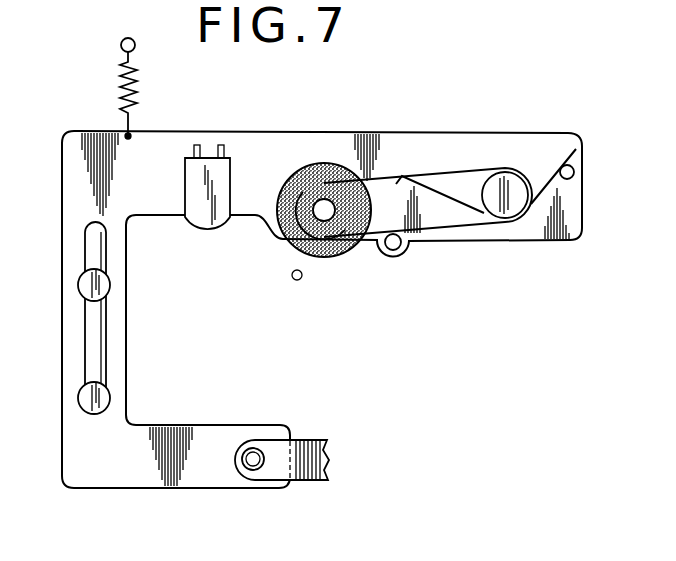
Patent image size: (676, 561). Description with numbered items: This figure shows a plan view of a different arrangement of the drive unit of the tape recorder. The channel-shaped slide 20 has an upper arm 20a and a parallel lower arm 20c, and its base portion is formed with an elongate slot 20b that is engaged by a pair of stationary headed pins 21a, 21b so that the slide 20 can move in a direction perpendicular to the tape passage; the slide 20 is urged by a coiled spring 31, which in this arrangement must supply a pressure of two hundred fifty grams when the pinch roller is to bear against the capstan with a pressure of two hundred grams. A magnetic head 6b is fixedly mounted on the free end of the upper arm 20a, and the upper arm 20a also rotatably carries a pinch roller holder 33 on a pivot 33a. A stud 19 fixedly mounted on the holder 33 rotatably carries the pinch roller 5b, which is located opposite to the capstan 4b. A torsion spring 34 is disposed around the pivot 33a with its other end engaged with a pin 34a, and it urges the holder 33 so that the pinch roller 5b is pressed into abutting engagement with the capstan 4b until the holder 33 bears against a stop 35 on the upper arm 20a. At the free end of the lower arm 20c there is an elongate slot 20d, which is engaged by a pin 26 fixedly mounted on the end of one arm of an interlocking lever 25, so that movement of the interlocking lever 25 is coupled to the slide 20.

The capstan 4b is at (302, 275).
The pinch roller 5b is at (318, 160).
The magnetic head 6b is at (220, 214).
The stud 19 is at (345, 234).
The slide 20 is at (62, 350).
The upper arm 20a is at (253, 143).
The elongate slot 20b is at (90, 337).
The lower arm 20c is at (163, 477).
The elongate slot 20d is at (266, 461).
The stationary headed pin 21a is at (108, 285).
The stationary headed pin 21b is at (108, 397).
The interlocking lever 25 is at (318, 440).
The pin 26 is at (255, 448).
The coiled spring 31 is at (121, 92).
The pinch roller holder 33 is at (445, 177).
The pivot 33a is at (510, 172).
The torsion spring 34 is at (465, 205).
The pin 34a is at (574, 173).
The stop 35 is at (400, 250).